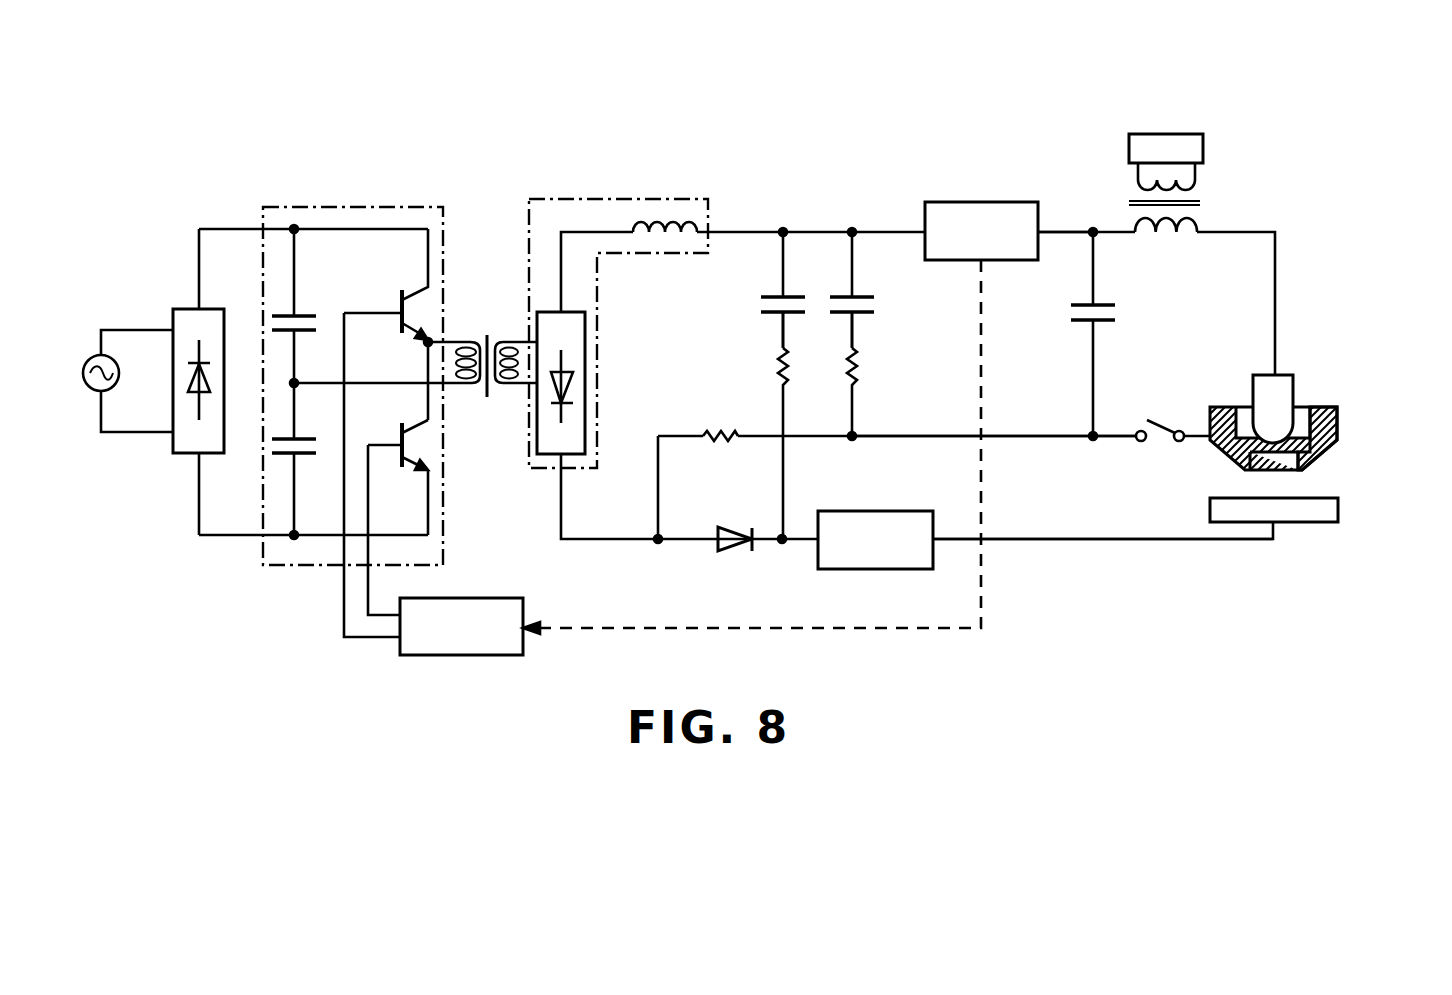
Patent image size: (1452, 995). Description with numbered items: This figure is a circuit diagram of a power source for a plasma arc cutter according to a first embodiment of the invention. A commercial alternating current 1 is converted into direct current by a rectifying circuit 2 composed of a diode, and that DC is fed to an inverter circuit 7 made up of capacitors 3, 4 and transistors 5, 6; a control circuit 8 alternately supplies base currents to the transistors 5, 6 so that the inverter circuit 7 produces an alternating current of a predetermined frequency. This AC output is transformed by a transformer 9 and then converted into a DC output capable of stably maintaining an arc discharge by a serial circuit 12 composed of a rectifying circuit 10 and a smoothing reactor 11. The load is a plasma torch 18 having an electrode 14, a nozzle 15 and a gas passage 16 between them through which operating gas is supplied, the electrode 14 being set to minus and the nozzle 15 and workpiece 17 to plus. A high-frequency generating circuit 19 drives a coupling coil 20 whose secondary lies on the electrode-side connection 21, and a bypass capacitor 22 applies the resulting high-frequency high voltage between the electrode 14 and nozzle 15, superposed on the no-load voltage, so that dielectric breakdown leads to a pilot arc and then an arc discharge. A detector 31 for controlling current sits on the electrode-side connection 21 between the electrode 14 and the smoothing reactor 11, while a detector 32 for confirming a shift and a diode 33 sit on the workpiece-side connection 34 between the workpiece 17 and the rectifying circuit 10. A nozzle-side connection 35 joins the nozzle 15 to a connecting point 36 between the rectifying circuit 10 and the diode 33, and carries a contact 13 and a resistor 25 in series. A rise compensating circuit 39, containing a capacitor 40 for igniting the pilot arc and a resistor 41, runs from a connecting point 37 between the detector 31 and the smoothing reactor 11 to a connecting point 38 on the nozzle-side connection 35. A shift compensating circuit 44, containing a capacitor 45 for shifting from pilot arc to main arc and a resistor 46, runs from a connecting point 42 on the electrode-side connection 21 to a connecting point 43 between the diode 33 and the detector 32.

The commercial alternating current 1 is at (88, 390).
The rectifying circuit 2 is at (186, 455).
The capacitor 3 is at (316, 312).
The capacitor 4 is at (272, 458).
The transistor 5 is at (440, 312).
The transistor 6 is at (440, 445).
The inverter circuit 7 is at (373, 207).
The control circuit 8 is at (485, 658).
The transformer 9 is at (487, 397).
The rectifying circuit 10 is at (567, 310).
The smoothing reactor 11 is at (650, 210).
The serial circuit 12 is at (557, 198).
The contact 13 is at (1165, 422).
The electrode 14 is at (1250, 372).
The nozzle 15 is at (1330, 405).
The gas passage 16 is at (1300, 404).
The workpiece 17 is at (1297, 525).
The plasma torch 18 is at (1324, 391).
The high-frequency generating circuit 19 is at (1203, 148).
The coupling coil 20 is at (1202, 203).
The electrode-side connection 21 is at (1063, 230).
The bypass capacitor 22 is at (1106, 305).
The resistor 25 is at (712, 428).
The detector for controlling a current 31 is at (1015, 202).
The detector for confirming a shift 32 is at (875, 569).
The diode 33 is at (735, 548).
The workpiece-side connection 34 is at (1160, 545).
The nozzle-side connection 35 is at (1055, 440).
The connecting point 36 is at (658, 545).
The connecting point 37 is at (852, 230).
The connecting point 38 is at (850, 442).
The rise compensating circuit 39 is at (866, 336).
The capacitor for igniting a pilot arc 40 is at (860, 298).
The resistor 41 is at (860, 354).
The connecting point 42 is at (781, 230).
The connecting point 43 is at (782, 545).
The shift compensating circuit 44 is at (760, 316).
The capacitor for shifting from a pilot arc to a main arc 45 is at (792, 300).
The resistor 46 is at (788, 362).